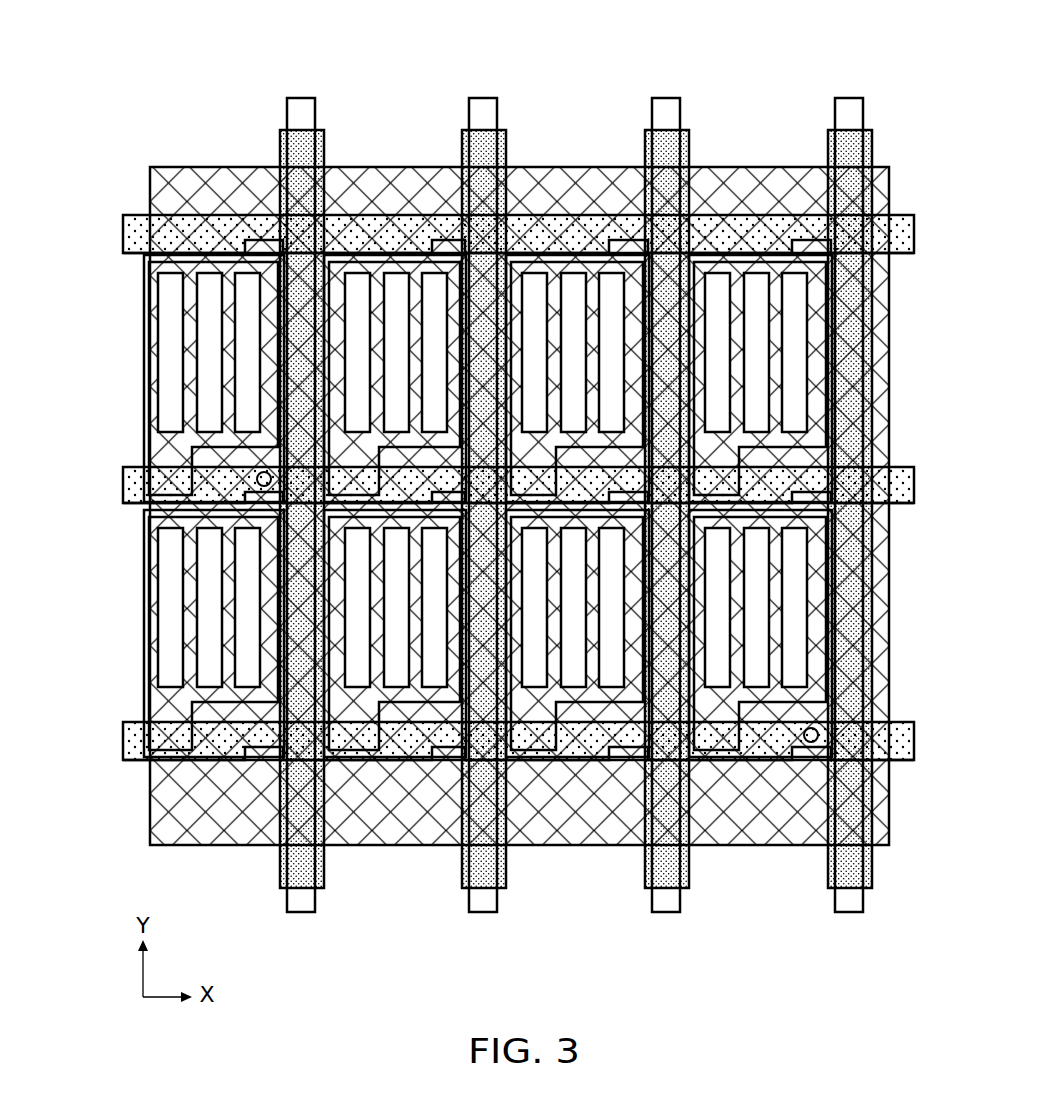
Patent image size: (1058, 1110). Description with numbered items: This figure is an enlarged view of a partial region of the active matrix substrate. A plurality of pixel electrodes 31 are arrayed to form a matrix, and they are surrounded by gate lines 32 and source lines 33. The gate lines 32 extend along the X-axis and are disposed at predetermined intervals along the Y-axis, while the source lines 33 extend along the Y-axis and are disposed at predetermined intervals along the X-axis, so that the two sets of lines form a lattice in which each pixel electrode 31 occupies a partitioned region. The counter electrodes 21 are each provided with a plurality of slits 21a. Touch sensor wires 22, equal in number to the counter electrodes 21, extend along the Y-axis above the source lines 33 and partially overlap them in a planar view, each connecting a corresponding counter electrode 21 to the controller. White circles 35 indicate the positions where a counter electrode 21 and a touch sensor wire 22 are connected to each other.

The counter electrode 21 is at (179, 167).
The slit 21a is at (150, 267).
The touch sensor wire 22 is at (324, 180).
The pixel electrode 31 is at (146, 348).
The gate line 32 is at (912, 215).
The source line 33 is at (301, 98).
The white circle 35 is at (263, 487).